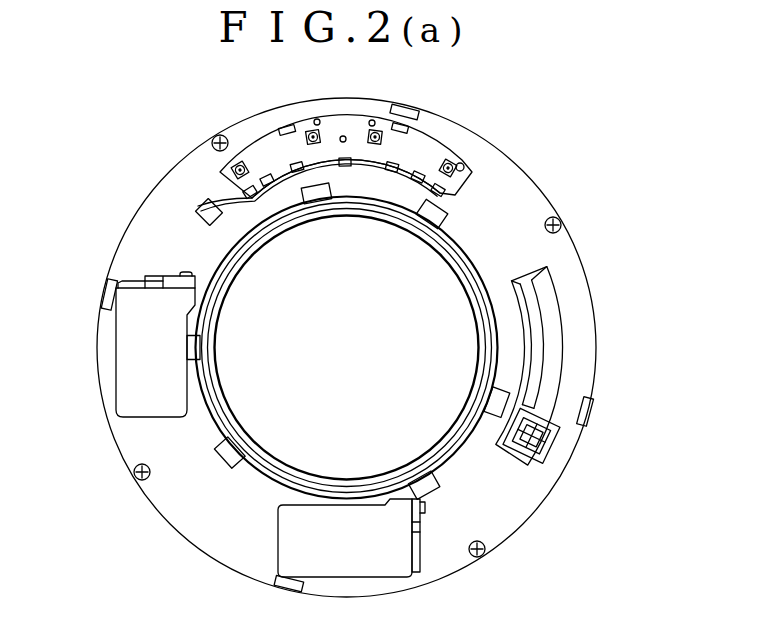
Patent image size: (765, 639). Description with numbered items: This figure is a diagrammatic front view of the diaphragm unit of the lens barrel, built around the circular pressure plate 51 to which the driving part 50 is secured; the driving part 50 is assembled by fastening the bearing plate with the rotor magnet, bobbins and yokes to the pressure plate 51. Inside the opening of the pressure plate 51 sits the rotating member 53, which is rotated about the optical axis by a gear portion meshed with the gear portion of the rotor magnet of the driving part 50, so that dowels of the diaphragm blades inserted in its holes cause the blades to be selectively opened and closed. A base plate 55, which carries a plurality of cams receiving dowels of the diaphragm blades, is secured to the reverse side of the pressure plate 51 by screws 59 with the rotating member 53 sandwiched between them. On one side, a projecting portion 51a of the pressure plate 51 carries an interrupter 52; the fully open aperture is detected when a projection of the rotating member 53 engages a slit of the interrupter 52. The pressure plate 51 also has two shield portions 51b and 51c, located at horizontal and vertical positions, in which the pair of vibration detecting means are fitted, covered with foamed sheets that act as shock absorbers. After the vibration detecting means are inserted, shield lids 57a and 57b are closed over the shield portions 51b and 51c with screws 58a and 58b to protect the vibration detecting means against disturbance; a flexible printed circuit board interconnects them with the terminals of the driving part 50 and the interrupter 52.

The driving part 50 is at (438, 150).
The pressure plate 51 is at (540, 177).
The projecting portion 51a is at (524, 296).
The shield portion 51b is at (392, 555).
The shield portion 51c is at (140, 386).
The interrupter 52 is at (548, 446).
The rotating member 53 is at (428, 220).
The base plate 55 is at (414, 107).
The shield lid 57a is at (420, 522).
The shield lid 57b is at (158, 279).
The screw 58a is at (427, 506).
The screw 58b is at (184, 272).
The screws 59 is at (368, 340).